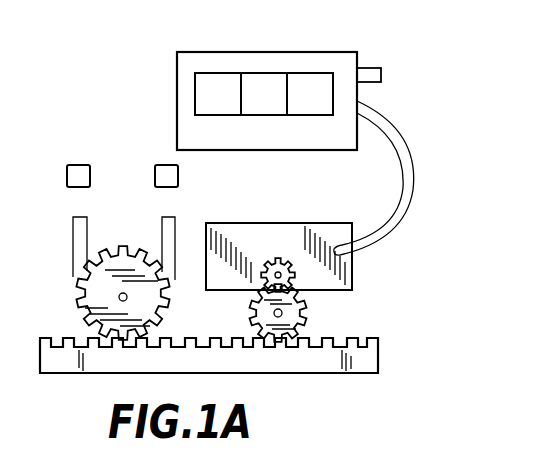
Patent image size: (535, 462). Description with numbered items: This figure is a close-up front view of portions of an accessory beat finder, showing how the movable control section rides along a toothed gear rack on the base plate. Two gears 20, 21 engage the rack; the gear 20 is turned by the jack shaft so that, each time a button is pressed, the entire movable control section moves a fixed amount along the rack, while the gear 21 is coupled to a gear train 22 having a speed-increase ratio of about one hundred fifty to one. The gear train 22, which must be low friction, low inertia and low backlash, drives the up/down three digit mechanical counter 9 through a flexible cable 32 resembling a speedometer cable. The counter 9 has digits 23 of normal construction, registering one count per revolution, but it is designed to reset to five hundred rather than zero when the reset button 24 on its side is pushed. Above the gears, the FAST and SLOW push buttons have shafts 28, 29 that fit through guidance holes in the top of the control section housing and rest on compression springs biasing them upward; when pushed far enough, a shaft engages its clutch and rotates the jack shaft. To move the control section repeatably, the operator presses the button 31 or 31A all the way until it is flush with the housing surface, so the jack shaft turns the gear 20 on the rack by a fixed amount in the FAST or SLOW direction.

The three digit mechanical counter 9 is at (259, 47).
The digits 23 is at (195, 85).
The reset button 24 is at (383, 75).
The flexible cable 32 is at (407, 160).
The gear train 22 is at (340, 310).
The gear 21 is at (320, 337).
The gear 20 is at (100, 298).
The button shaft 28 is at (73, 245).
The button shaft 29 is at (176, 232).
The button 31 is at (82, 165).
The button 31A is at (166, 165).